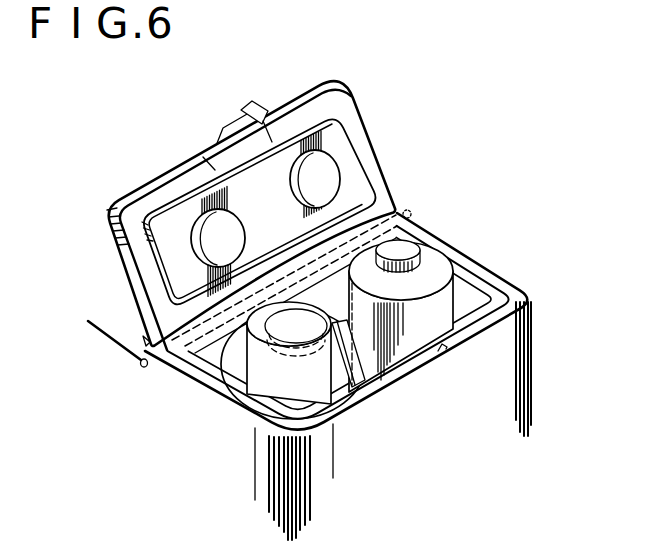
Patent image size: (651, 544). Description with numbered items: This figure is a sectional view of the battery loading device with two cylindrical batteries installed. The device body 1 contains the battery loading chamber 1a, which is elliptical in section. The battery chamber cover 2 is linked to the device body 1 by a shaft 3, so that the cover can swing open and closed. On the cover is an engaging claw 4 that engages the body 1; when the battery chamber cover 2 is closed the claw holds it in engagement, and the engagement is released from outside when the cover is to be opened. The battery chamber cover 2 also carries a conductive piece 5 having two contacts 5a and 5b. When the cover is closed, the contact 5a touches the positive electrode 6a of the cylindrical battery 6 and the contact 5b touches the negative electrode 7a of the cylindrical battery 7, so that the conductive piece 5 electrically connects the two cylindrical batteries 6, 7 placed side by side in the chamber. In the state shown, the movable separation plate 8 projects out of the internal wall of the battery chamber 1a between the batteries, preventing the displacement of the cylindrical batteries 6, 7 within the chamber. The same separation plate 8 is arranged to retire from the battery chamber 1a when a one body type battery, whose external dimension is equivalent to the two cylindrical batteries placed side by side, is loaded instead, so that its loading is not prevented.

The device body 1 is at (521, 288).
The battery loading chamber 1a is at (459, 293).
The battery chamber cover 2 is at (342, 100).
The shaft 3 is at (145, 368).
The engaging claw 4 is at (245, 122).
The conductive piece 5 is at (338, 133).
The contact 5a is at (325, 187).
The contact 5b is at (207, 232).
The cylindrical battery 6 is at (433, 266).
The positive electrode 6a is at (404, 246).
The cylindrical battery 7 is at (254, 360).
The negative electrode 7a is at (270, 380).
The movable separation plate 8 is at (366, 352).